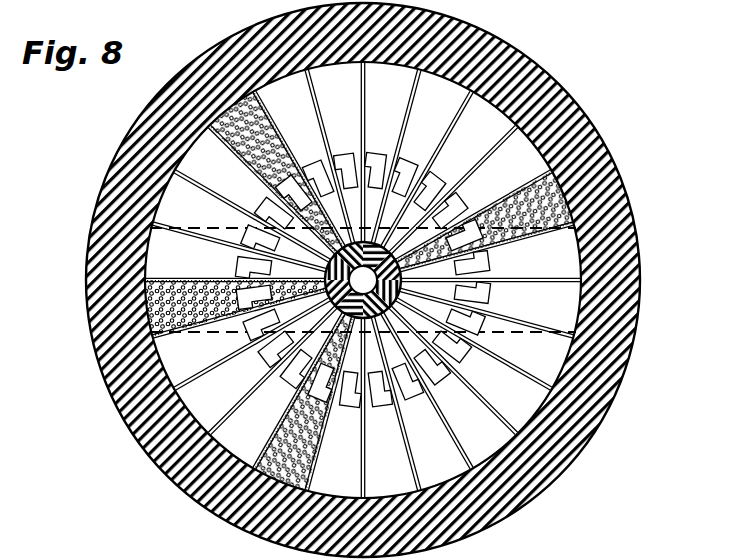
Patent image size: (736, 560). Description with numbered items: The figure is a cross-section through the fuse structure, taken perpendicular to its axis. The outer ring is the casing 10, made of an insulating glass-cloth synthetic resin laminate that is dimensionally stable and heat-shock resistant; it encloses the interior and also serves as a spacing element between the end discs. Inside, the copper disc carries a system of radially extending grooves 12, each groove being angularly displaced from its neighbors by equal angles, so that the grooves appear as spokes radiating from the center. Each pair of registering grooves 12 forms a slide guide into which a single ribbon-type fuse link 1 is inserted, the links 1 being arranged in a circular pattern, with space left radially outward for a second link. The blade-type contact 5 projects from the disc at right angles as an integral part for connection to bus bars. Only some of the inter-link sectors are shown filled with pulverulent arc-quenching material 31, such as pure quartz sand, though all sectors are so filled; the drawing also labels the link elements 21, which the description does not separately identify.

The casing 10 is at (568, 102).
The blade-type contact 5 is at (580, 317).
The granular filling 31 is at (566, 181).
The radially extending grooves 12 is at (240, 468).
The fuse link 1 is at (228, 276).
The block member 21 is at (264, 198).